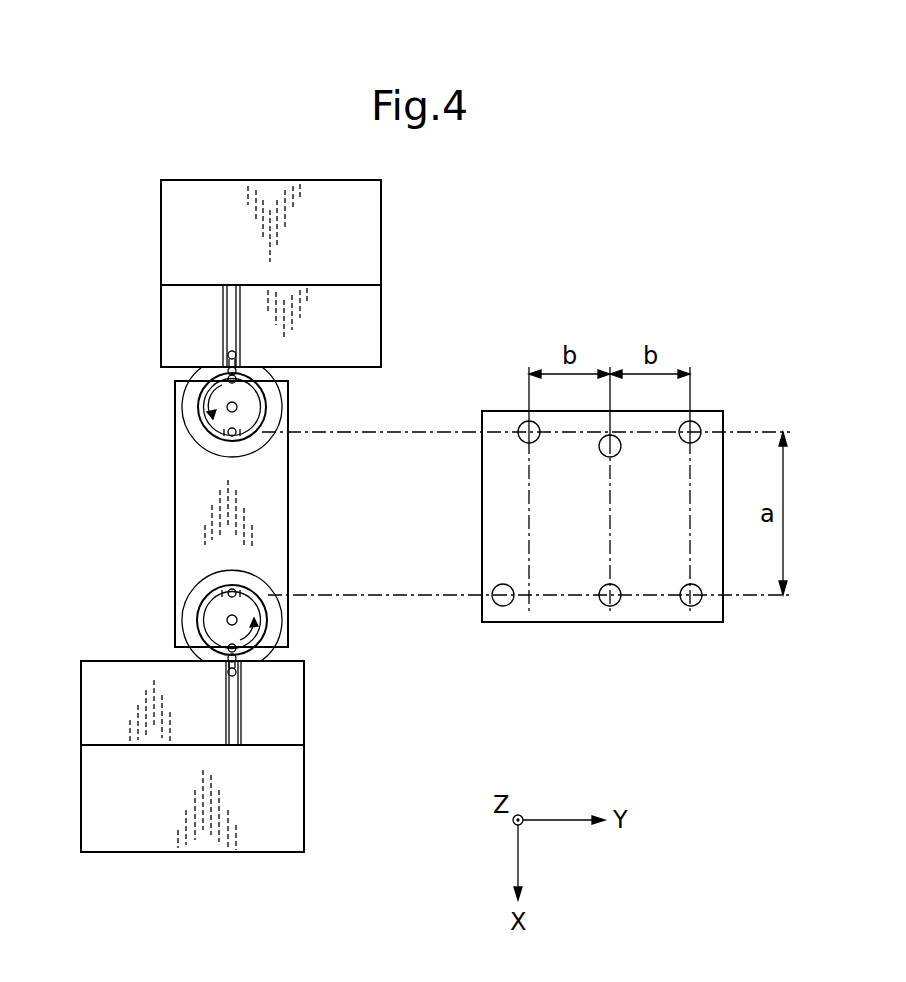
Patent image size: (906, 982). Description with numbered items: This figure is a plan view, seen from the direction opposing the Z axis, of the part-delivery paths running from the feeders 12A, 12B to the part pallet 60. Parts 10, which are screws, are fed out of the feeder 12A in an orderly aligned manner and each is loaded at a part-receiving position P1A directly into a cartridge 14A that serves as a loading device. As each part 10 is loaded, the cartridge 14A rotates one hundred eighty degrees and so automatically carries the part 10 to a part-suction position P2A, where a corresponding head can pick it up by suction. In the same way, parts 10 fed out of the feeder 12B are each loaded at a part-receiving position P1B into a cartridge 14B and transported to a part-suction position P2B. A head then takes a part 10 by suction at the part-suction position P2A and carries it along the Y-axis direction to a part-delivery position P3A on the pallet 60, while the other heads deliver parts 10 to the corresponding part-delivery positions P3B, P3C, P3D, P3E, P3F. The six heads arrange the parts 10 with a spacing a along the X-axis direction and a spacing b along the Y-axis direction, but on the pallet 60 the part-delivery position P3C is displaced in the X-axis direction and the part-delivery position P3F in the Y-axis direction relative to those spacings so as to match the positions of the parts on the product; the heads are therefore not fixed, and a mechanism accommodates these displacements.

The part 10 is at (227, 437).
The feeder 12A is at (186, 217).
The feeder 12B is at (105, 702).
The cartridge 14A is at (249, 392).
The cartridge 14B is at (247, 608).
The part pallet 60 is at (655, 613).
The part-receiving position P1A is at (255, 395).
The part-suction position P2A is at (240, 430).
The part-receiving position P1B is at (226, 618).
The part-suction position P2B is at (218, 598).
The part-delivery position P3A is at (697, 423).
The part-delivery position P3B is at (697, 607).
The part-delivery position P3C is at (600, 446).
The part-delivery position P3D is at (603, 607).
The part-delivery position P3E is at (523, 425).
The part-delivery position P3F is at (497, 607).